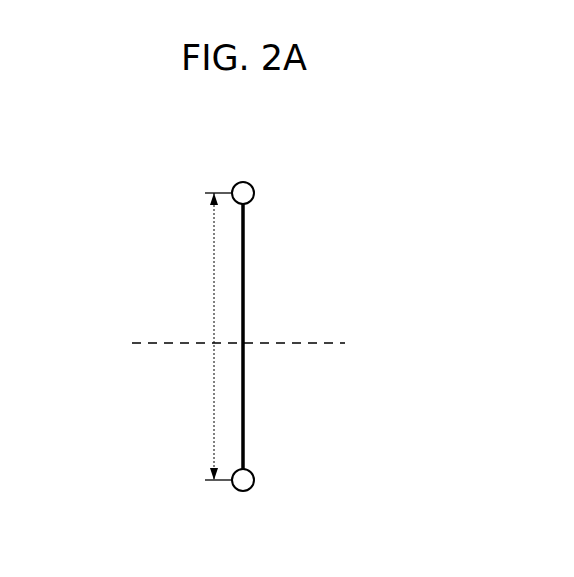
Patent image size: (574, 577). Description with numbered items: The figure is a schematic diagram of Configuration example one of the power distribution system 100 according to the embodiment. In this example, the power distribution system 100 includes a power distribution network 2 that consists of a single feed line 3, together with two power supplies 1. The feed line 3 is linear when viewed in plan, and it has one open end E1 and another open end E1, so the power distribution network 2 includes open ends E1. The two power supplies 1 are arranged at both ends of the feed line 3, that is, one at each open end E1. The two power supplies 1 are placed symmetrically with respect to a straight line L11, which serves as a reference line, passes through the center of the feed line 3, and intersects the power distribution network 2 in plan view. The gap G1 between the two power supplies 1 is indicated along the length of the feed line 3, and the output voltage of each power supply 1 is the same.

The power distribution system 100 is at (128, 193).
The power supply 1 is at (240, 200).
The open end E1 is at (244, 208).
The power distribution network 2 is at (245, 288).
The feed line 3 is at (245, 378).
The straight line L11 is at (162, 343).
The gap G1 is at (214, 407).